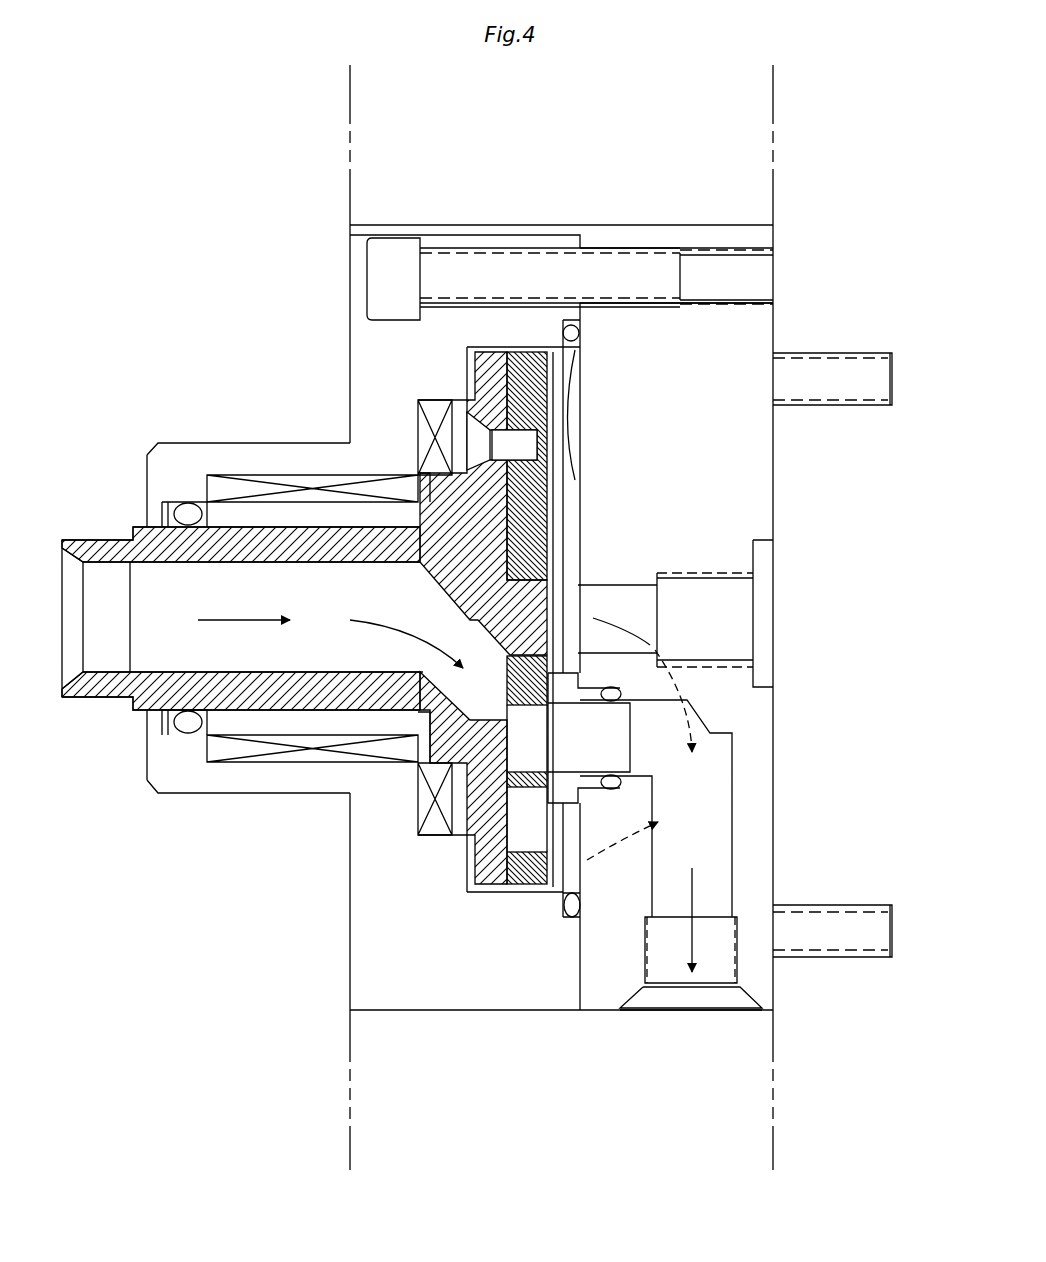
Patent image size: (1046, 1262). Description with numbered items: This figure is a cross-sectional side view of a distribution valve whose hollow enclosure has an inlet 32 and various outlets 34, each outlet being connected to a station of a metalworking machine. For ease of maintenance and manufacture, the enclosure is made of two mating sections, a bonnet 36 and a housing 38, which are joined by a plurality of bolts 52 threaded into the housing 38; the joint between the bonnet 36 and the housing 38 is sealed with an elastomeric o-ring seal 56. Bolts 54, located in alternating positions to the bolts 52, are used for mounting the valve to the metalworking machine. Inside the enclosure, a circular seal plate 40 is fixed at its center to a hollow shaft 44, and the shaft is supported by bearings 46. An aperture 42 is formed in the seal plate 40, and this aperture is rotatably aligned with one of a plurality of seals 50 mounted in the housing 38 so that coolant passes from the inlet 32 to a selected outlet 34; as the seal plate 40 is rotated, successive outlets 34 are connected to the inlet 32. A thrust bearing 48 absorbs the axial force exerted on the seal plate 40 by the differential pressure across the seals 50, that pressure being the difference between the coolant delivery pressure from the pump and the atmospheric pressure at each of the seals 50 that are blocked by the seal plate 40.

The inlet 32 is at (62, 628).
The outlet 34 is at (693, 1012).
The bonnet 36 is at (372, 360).
The housing 38 is at (715, 340).
The seal plate 40 is at (531, 358).
The aperture 42 is at (500, 755).
The hollow shaft 44 is at (233, 698).
The bearings 46 is at (243, 483).
The thrust bearing 48 is at (432, 432).
The seals 50 is at (623, 752).
The bolts 52 is at (407, 245).
The bolts 54 is at (828, 370).
The o-ring seal 56 is at (577, 320).